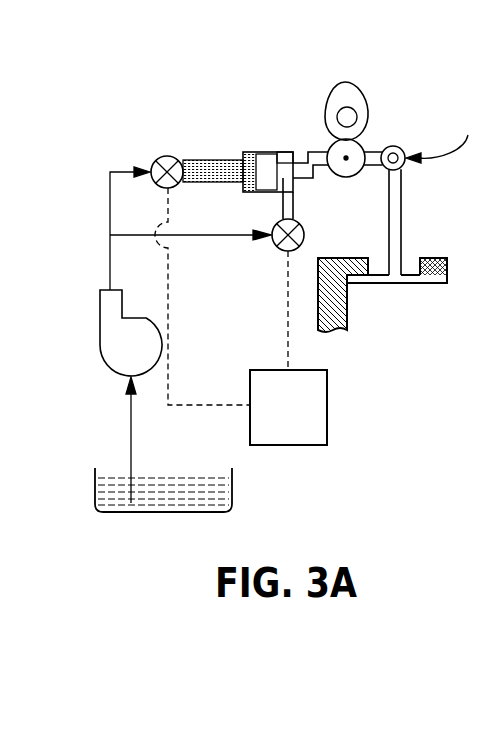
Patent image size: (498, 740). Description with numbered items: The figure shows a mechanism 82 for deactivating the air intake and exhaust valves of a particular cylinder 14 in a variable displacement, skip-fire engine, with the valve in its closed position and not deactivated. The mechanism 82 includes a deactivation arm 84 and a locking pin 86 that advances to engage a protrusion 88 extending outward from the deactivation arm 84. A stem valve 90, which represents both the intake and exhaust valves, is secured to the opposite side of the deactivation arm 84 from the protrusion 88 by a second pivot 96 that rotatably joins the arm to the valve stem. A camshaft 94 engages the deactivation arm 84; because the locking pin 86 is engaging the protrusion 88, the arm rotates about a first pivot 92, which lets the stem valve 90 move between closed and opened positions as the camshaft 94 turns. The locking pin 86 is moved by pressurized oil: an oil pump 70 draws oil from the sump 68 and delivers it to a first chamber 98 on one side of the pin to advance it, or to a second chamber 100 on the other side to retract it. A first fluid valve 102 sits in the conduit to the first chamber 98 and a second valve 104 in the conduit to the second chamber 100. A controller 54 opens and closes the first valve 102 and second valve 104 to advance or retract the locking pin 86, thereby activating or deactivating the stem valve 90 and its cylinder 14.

The cylinder 14 is at (415, 317).
The controller 54 is at (273, 368).
The oil pan or sump 68 is at (183, 507).
The oil pump 70 is at (100, 327).
The mechanism 82 is at (410, 80).
The deactivation arm 84 is at (441, 138).
The locking pin 86 is at (268, 157).
The protrusion 88 is at (318, 150).
The stem valve 90 is at (403, 247).
The first pivot 92 is at (346, 158).
The camshaft 94 is at (323, 110).
The second pivot 96 is at (391, 147).
The first chamber 98 is at (207, 161).
The second chamber 100 is at (295, 209).
The first fluid valve 102 is at (156, 161).
The second valve 104 is at (274, 227).